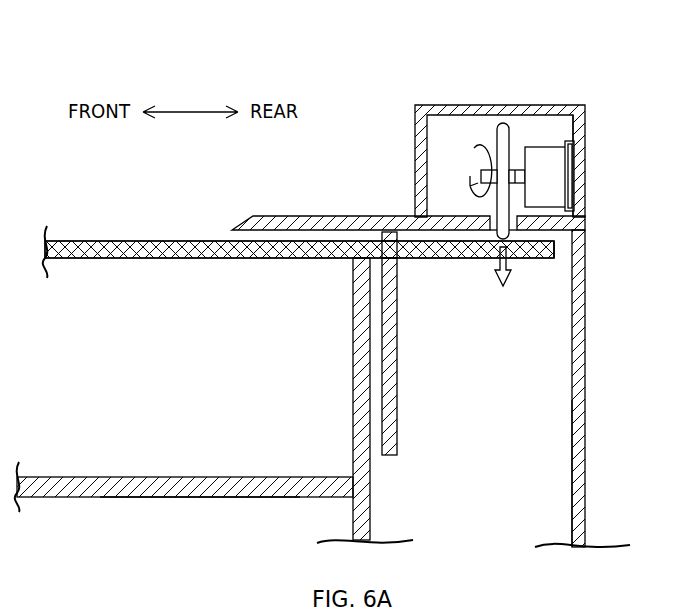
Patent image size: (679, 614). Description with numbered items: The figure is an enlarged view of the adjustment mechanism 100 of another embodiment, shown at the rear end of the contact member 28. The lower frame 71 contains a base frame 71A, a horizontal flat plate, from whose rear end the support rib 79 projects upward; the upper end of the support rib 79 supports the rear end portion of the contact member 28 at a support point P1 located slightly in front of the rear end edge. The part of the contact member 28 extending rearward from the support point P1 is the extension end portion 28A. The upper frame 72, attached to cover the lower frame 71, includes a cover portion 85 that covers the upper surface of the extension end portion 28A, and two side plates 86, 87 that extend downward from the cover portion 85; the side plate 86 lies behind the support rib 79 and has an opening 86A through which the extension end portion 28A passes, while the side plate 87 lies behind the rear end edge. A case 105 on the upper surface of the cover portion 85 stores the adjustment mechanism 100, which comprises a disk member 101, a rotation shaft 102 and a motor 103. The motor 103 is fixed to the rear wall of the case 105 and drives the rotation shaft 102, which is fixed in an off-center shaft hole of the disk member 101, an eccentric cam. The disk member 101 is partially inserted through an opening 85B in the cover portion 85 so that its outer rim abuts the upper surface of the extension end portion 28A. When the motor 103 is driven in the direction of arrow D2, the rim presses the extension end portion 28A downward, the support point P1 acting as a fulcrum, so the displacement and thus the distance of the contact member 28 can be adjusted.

The contact member 28 is at (97, 240).
The extension end portion 28A is at (523, 259).
The lower frame 71 is at (370, 492).
The base frame 71A is at (165, 498).
The upper frame 72 is at (585, 238).
The support rib 79 is at (353, 412).
The cover portion 85 is at (320, 216).
The opening 85B is at (490, 232).
The side plate 86 is at (397, 402).
The opening 86A is at (409, 268).
The side plate 87 is at (572, 495).
The adjustment mechanism 100 is at (416, 83).
The disk member 101 is at (503, 120).
The rotation shaft 102 is at (518, 168).
The motor 103 is at (574, 108).
The case 105 is at (585, 130).
The rotation direction arrow D2 is at (474, 148).
The support point P1 is at (363, 238).